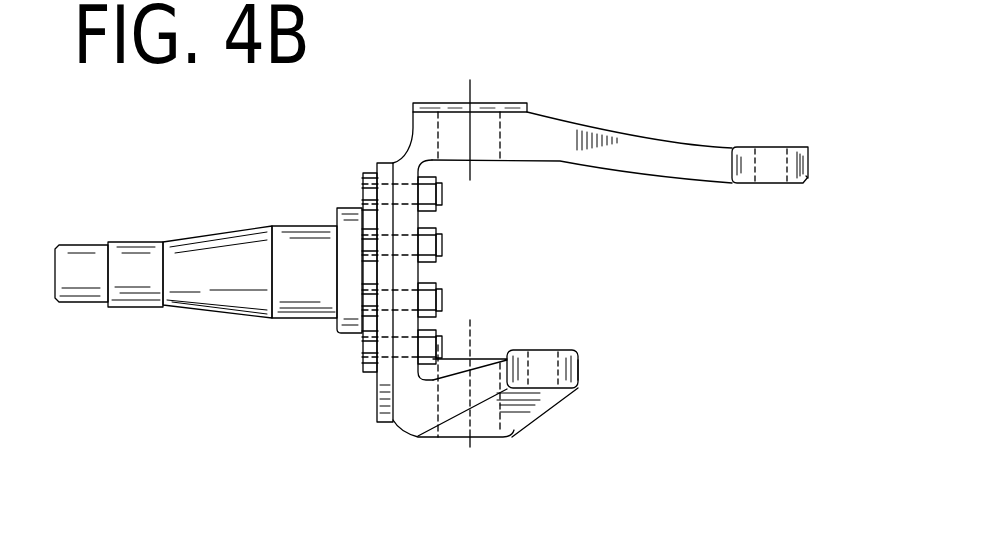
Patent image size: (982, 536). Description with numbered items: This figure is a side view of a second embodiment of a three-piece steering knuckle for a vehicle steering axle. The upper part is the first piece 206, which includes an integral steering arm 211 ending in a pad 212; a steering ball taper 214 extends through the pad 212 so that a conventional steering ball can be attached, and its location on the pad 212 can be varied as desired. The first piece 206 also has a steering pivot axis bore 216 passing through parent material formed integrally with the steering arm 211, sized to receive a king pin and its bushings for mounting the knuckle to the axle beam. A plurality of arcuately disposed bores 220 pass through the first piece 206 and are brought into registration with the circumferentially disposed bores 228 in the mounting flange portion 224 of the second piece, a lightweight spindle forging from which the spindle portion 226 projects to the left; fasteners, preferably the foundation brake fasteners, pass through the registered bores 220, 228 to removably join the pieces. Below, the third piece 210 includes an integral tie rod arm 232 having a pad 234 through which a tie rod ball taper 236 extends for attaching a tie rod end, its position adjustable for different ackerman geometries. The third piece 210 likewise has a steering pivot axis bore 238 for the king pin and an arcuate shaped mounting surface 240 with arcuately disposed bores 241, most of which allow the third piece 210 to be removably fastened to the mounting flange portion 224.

The first piece 206 is at (654, 118).
The third piece 210 is at (370, 438).
The steering arm 211 is at (648, 163).
The pad 212 is at (806, 176).
The steering ball taper 214 is at (765, 153).
The steering pivot axis bore 216 is at (470, 102).
The arcuately disposed bores 220 is at (436, 235).
The mounting flange portion 224 is at (376, 403).
The spindle portion 226 is at (183, 288).
The circumferentially disposed bores 228 is at (360, 192).
The tie rod arm 232 is at (551, 369).
The pad 234 is at (580, 380).
The tie rod ball taper 236 is at (545, 357).
The steering pivot axis bore 238 is at (483, 372).
The arcuate shaped mounting surface 240 is at (410, 282).
The arcuately disposed bores 241 is at (403, 345).